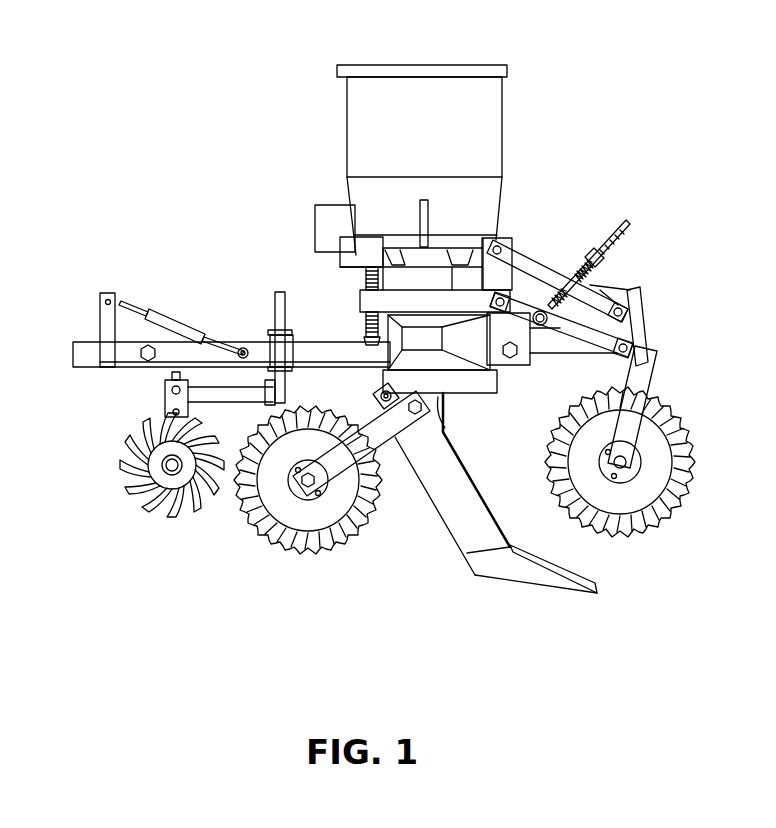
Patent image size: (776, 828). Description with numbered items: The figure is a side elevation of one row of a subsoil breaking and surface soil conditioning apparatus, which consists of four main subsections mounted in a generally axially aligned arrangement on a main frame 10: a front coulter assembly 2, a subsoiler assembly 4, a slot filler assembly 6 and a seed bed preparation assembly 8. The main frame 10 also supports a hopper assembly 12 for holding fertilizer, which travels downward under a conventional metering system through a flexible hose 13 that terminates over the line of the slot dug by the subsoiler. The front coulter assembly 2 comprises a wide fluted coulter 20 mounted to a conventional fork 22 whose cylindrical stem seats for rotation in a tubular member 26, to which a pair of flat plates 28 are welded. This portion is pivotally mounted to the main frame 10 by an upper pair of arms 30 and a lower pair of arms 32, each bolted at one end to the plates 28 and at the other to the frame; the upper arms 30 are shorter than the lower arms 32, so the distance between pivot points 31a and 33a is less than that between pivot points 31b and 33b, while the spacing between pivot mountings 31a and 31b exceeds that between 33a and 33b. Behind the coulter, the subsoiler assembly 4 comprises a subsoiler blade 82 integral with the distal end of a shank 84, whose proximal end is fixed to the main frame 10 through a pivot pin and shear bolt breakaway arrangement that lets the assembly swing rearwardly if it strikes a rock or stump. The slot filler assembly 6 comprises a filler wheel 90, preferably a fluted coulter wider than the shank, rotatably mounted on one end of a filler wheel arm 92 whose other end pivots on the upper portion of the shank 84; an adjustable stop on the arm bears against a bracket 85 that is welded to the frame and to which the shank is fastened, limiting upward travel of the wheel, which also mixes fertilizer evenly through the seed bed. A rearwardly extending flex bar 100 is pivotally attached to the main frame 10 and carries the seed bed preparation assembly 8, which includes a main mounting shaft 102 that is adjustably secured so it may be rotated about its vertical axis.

The front coulter assembly 2 is at (584, 222).
The subsoiler assembly 4 is at (501, 587).
The slot filler assembly 6 is at (298, 509).
The seed bed preparation assembly 8 is at (165, 515).
The main frame 10 is at (482, 384).
The hopper assembly 12 is at (362, 100).
The flexible hose 13 is at (366, 330).
The fluted coulter 20 is at (638, 522).
The fork 22 is at (635, 412).
The tubular member 26 is at (648, 336).
The flat plates 28 is at (640, 316).
The upper pair of arms 30 is at (532, 268).
The pivot point 31a is at (500, 246).
The pivot point 31b is at (439, 342).
The lower pair of arms 32 is at (570, 330).
The pivot point 33a is at (616, 292).
The pivot point 33b is at (617, 352).
The subsoiler blade 82 is at (556, 575).
The shank 84 is at (470, 525).
The bracket 85 is at (440, 400).
The filler wheel 90 is at (275, 540).
The filler wheel arm 92 is at (370, 437).
The flex bar 100 is at (255, 343).
The main mounting shaft 102 is at (280, 300).